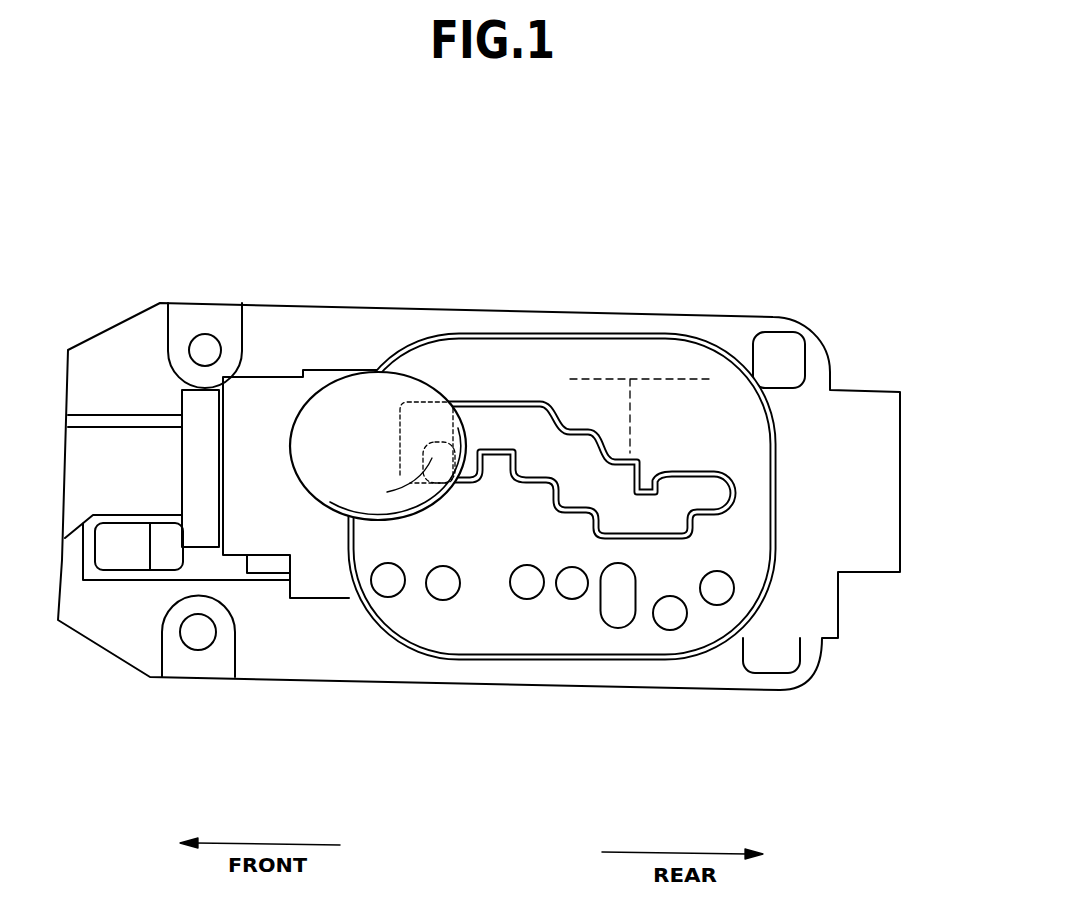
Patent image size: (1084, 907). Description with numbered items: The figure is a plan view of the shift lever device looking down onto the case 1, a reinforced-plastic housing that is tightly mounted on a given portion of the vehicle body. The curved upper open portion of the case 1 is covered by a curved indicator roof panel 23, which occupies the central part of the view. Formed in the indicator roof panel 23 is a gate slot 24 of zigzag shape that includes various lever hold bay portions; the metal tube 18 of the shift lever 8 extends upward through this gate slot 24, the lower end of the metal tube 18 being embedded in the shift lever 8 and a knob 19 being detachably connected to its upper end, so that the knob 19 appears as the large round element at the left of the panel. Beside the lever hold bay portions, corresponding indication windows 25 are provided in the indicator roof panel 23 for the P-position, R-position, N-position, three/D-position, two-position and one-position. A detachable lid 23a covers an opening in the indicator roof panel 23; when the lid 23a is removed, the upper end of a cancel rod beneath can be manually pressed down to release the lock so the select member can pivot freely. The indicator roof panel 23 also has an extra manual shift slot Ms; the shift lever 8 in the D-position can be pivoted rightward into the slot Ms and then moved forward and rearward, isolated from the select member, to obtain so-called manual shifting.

The case 1 is at (496, 309).
The shift lever 8 is at (438, 365).
The metal tube 18 is at (398, 457).
The knob 19 is at (347, 403).
The indicator roof panel 23 is at (585, 333).
The detachable lid 23a is at (388, 597).
The gate slot 24 is at (647, 466).
The indication windows 25 is at (570, 600).
The manual shift slot Ms is at (610, 378).